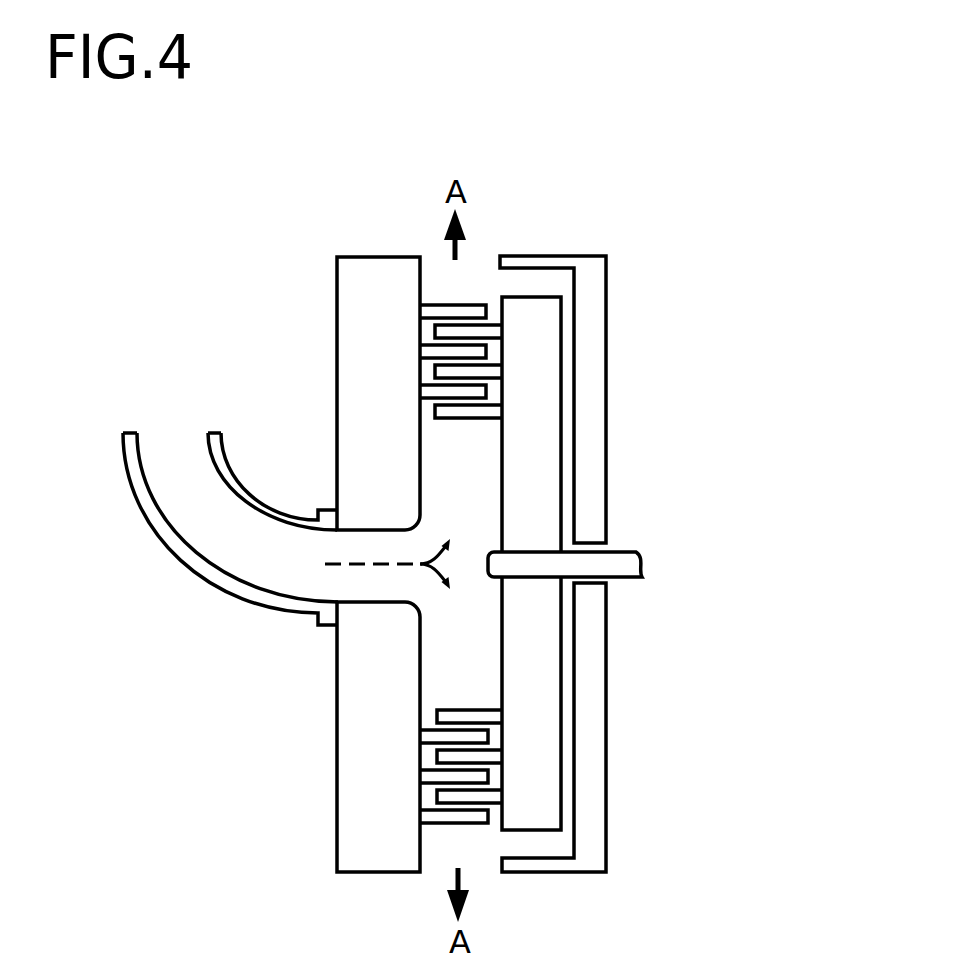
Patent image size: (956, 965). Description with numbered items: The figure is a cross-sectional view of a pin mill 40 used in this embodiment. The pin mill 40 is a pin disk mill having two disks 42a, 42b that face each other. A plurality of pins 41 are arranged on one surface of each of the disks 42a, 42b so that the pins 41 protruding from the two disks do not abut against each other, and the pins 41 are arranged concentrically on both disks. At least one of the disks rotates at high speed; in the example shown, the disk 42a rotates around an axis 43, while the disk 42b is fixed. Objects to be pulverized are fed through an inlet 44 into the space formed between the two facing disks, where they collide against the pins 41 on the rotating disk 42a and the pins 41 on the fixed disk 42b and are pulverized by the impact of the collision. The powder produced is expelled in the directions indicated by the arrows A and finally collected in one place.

The pin mill 40 is at (715, 280).
The pins 41 is at (455, 305).
The disk 42a is at (547, 770).
The disk 42b is at (367, 765).
The axis 43 is at (622, 560).
The inlet 44 is at (167, 408).